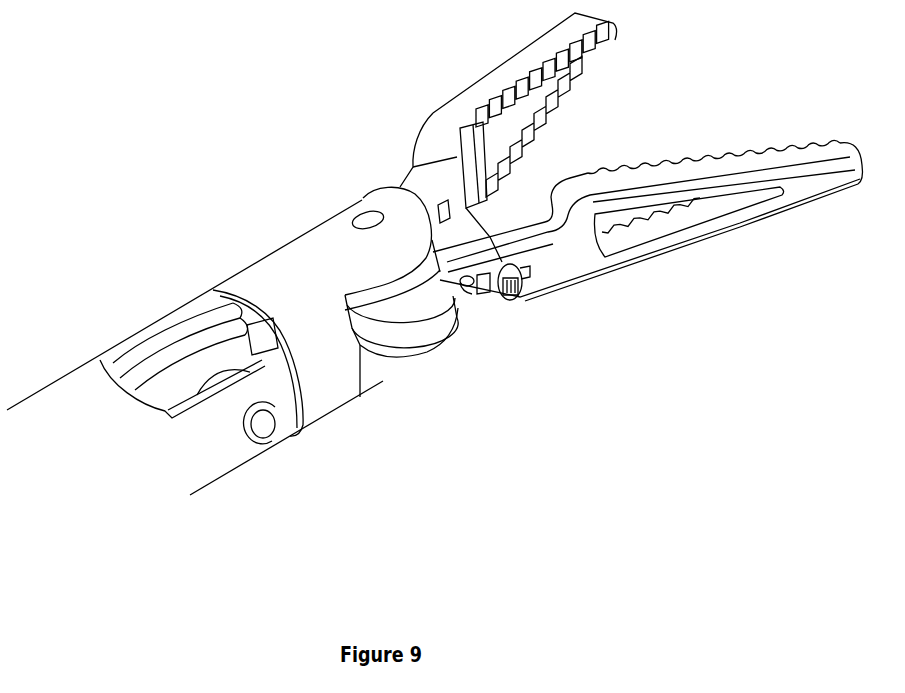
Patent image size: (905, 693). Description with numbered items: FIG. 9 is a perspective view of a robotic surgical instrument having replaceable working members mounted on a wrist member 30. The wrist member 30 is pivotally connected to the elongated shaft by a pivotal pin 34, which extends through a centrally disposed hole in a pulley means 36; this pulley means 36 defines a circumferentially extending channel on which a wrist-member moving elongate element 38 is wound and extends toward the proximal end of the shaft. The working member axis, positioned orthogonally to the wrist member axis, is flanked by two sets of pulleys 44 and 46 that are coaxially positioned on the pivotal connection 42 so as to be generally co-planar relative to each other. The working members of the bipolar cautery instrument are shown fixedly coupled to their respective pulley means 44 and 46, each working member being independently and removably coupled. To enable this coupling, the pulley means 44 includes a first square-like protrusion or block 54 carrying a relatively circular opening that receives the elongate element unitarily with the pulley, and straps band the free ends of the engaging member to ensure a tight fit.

The wrist member 30 is at (232, 462).
The pivotal pin 34 is at (268, 427).
The pulley means 36 is at (175, 323).
The wrist-member moving elongate element 38 is at (157, 372).
The pivotal connection 42 is at (366, 216).
The pulley means 44 is at (365, 300).
The pulley means 46 is at (418, 347).
The square-like protrusion or block 54 is at (440, 203).